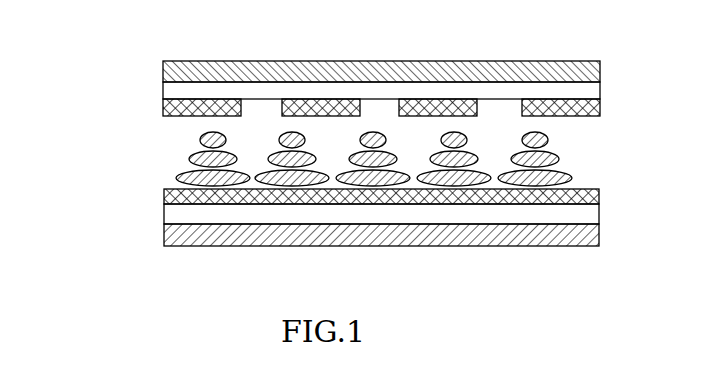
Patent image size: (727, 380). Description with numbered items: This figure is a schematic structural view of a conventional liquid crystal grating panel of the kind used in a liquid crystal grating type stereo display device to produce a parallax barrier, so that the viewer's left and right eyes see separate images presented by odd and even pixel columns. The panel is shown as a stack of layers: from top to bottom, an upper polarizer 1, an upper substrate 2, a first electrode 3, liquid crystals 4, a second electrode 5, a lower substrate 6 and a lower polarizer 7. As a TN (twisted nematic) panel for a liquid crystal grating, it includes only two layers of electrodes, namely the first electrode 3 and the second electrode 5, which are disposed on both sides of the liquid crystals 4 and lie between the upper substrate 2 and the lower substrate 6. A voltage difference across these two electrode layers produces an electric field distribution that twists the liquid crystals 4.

The upper polarizer 1 is at (165, 67).
The upper substrate 2 is at (163, 90).
The first electrode 3 is at (163, 112).
The liquid crystals 4 is at (189, 158).
The second electrode 5 is at (164, 200).
The lower substrate 6 is at (175, 217).
The lower polarizer 7 is at (170, 240).